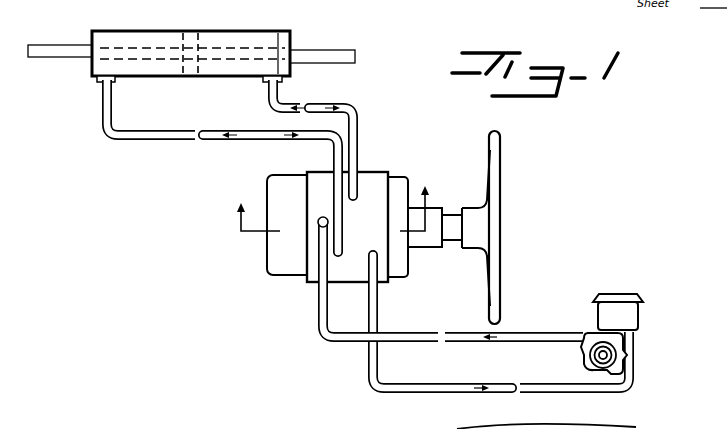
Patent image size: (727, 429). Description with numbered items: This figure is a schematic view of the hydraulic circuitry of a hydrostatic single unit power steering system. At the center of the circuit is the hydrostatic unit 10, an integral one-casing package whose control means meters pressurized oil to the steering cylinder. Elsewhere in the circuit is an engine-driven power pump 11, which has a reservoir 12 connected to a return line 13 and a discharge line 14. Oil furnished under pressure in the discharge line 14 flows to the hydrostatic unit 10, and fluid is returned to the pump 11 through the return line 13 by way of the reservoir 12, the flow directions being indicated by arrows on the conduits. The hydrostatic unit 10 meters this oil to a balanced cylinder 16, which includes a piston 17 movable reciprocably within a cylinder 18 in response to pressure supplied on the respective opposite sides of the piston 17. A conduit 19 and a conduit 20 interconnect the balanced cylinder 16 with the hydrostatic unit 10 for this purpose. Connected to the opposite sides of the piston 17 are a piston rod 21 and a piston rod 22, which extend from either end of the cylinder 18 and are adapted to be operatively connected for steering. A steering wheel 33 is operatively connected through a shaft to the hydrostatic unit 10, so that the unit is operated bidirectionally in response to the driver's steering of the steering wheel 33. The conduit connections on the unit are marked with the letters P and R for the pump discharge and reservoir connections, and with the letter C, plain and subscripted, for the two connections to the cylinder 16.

The hydrostatic unit 10 is at (275, 281).
The power pump 11 is at (624, 357).
The reservoir 12 is at (640, 318).
The return line 13 is at (628, 389).
The discharge line 14 is at (527, 335).
The balanced cylinder 16 is at (175, 79).
The piston 17 is at (216, 31).
The cylinder 18 is at (282, 43).
The conduit 19 is at (328, 103).
The conduit 20 is at (152, 141).
The piston rod 21 is at (355, 53).
The piston rod 22 is at (50, 58).
The steering wheel 33 is at (502, 215).